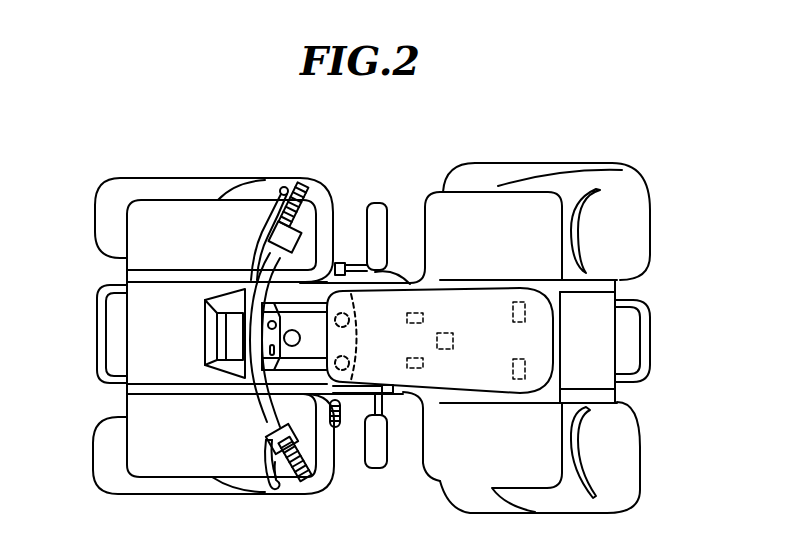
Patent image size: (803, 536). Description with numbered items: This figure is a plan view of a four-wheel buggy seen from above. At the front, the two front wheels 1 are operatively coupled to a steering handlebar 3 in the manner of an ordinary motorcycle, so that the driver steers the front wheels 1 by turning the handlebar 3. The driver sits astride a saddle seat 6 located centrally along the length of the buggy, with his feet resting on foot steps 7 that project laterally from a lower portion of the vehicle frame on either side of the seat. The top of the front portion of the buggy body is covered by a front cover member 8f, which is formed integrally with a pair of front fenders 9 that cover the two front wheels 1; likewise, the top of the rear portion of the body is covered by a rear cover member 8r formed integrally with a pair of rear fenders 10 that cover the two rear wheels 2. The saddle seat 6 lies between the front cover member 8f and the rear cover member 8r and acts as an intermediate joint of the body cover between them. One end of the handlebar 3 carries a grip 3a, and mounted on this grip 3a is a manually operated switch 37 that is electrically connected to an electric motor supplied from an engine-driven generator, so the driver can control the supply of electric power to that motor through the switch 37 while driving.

The front wheels 1 is at (121, 184).
The rear wheels 2 is at (634, 184).
The steering handlebar 3 is at (262, 268).
The grip 3a is at (320, 470).
The driver's saddle seat 6 is at (444, 295).
The foot steps 7 is at (372, 203).
The front cover member 8f is at (130, 307).
The rear cover member 8r is at (607, 298).
The front fenders 9 is at (168, 203).
The rear fenders 10 is at (508, 192).
The manually operated switch 37 is at (270, 452).